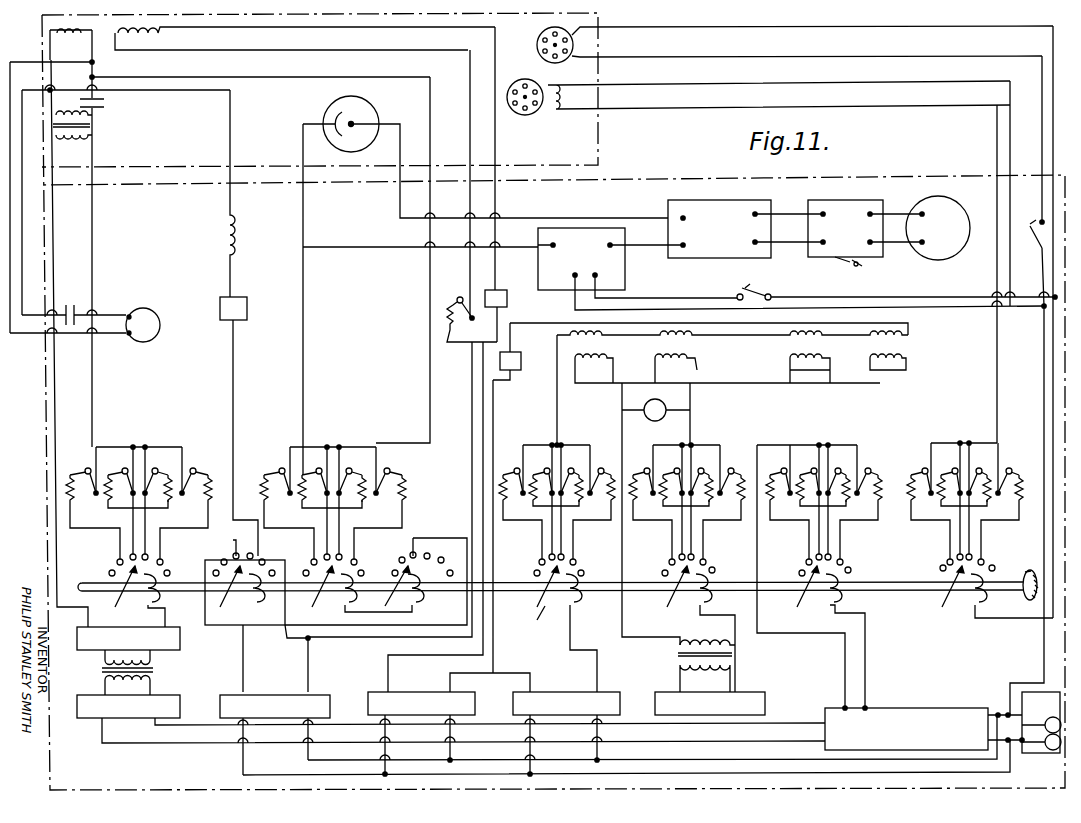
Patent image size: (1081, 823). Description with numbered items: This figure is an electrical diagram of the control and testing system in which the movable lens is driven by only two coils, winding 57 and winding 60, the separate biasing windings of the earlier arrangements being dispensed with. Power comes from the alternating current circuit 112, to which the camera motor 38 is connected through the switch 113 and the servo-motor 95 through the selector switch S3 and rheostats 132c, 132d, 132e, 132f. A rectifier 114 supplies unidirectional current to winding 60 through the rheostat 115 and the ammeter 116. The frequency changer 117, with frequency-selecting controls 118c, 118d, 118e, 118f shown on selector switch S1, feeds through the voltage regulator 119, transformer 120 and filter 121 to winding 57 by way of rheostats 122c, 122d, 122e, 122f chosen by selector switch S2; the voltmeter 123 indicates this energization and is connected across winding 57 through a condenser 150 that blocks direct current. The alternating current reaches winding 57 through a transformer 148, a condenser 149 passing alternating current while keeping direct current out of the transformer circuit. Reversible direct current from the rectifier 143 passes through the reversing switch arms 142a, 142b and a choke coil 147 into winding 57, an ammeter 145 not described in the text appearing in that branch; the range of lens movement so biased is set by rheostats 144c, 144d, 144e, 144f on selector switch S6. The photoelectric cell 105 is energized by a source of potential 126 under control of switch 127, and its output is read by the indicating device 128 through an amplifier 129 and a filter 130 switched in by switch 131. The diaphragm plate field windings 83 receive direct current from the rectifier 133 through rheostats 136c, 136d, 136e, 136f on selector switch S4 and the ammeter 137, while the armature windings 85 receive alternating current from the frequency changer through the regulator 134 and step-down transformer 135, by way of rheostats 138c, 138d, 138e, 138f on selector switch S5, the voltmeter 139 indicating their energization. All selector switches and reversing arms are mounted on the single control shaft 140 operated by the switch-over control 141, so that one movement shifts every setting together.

The winding 57 is at (71, 44).
The winding 60 is at (305, 38).
The condenser 149 is at (108, 103).
The transformer 148 is at (104, 128).
The choke coil 147 is at (238, 238).
The condenser 150 is at (71, 303).
The voltmeter 123 is at (155, 312).
The ammeter 145 is at (249, 309).
The photoelectric cell 105 is at (372, 103).
The camera motor 38 is at (784, 44).
The servo-motor 95 is at (758, 89).
The source of potential 126 is at (792, 269).
The amplifier 129 is at (730, 193).
The electrical filter 130 is at (842, 193).
The switch 131 is at (868, 265).
The indicating device 128 is at (953, 198).
The switch 127 is at (760, 288).
The switch 113 is at (1038, 242).
The rheostat 115 is at (468, 313).
The ammeter 116 is at (507, 299).
The ammeter 137 is at (521, 361).
The field windings 83 is at (746, 388).
The armature windings 85 is at (755, 368).
The voltmeter 139 is at (668, 394).
The resistor 122c is at (85, 462).
The rheostat control 122d is at (112, 462).
The resistor 122e is at (155, 462).
The resistor 122f is at (196, 462).
The resistor 144c is at (278, 462).
The rheostat control 144d is at (306, 462).
The resistor 144e is at (349, 462).
The resistor 144f is at (388, 462).
The resistor 136c is at (513, 462).
The rheostat 136d is at (536, 462).
The resistor 136e is at (574, 462).
The resistor 136f is at (603, 462).
The resistor 138c is at (645, 462).
The rheostat 138d is at (668, 462).
The resistor 138e is at (702, 462).
The resistor 138f is at (733, 462).
The resistor 118c is at (772, 462).
The control 118d is at (800, 462).
The resistor 118e is at (838, 462).
The resistor 118f is at (869, 462).
The resistor 132c is at (922, 462).
The rheostat 132d is at (944, 462).
The resistor 132e is at (981, 462).
The resistor 132f is at (1011, 462).
The selector switch S2 is at (123, 583).
The selector switch S6 is at (357, 578).
The selector switch S4 is at (562, 616).
The selector switch S5 is at (697, 616).
The selector switch S1 is at (830, 624).
The selector switch S3 is at (980, 579).
The reversing switch arm 142a is at (257, 614).
The reversing switch arm 142b is at (376, 580).
The control shaft 140 is at (528, 613).
The switch-over control 141 is at (1020, 598).
The filter 121 is at (180, 642).
The transformer 120 is at (158, 668).
The voltage regulator 119 is at (165, 690).
The rectifier 143 is at (263, 690).
The rectifier 114 is at (420, 678).
The rectifier 133 is at (558, 688).
The step-down transformer 135 is at (735, 650).
The regulator 134 is at (748, 685).
The frequency changer 117 is at (890, 706).
The alternating current power circuit 112 is at (1024, 722).